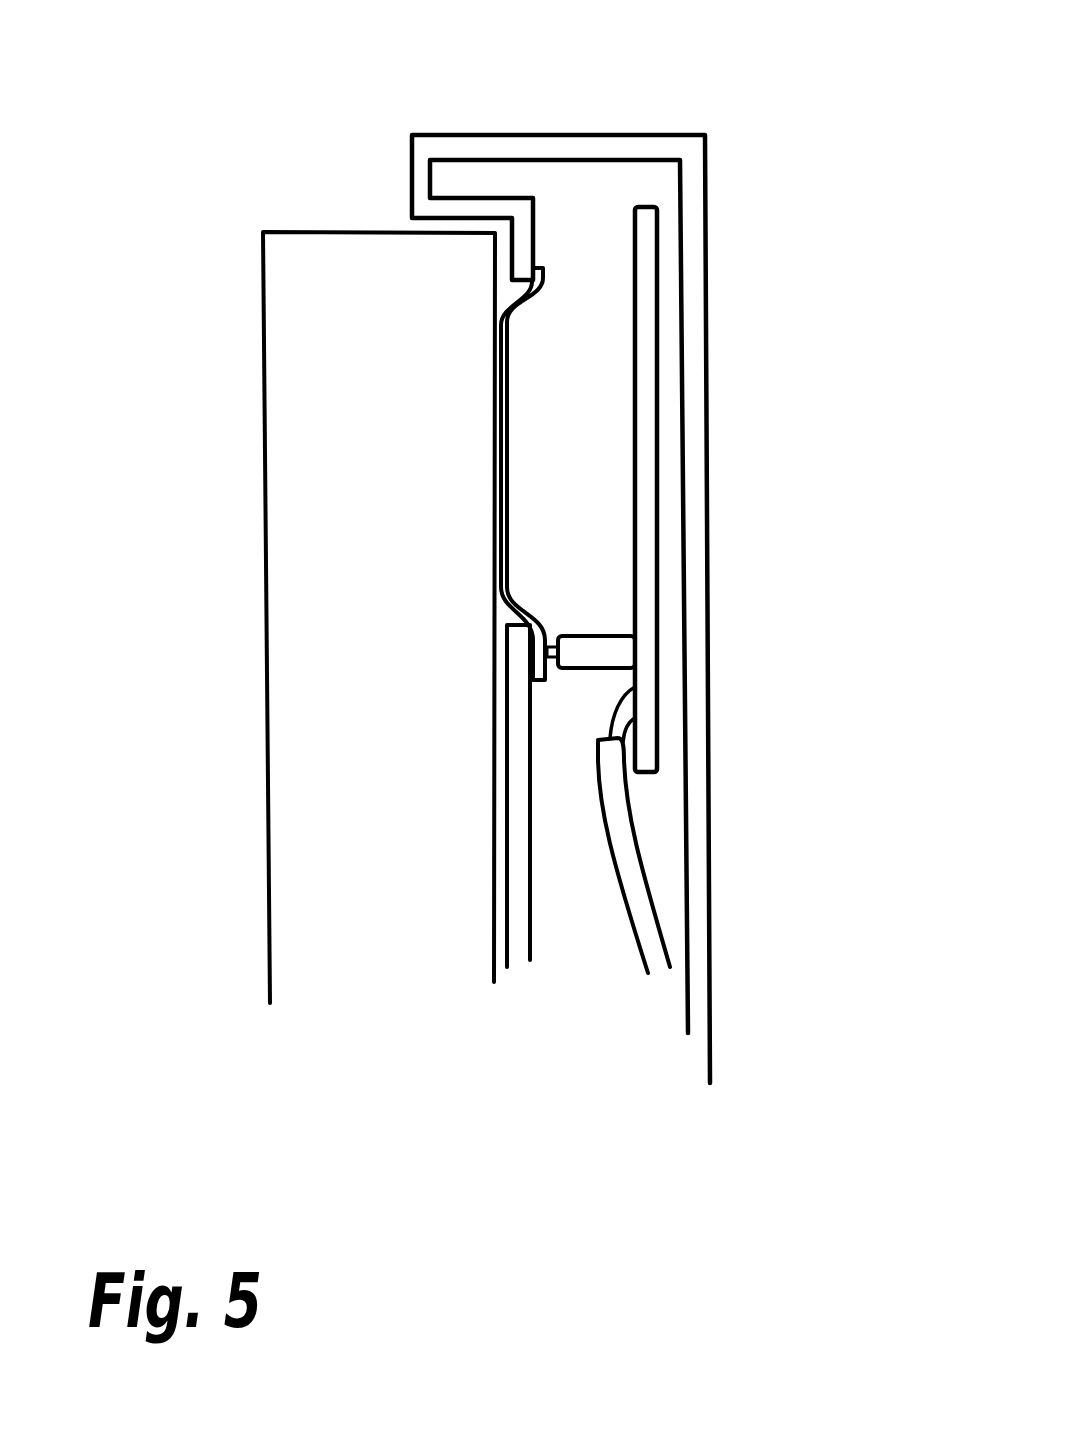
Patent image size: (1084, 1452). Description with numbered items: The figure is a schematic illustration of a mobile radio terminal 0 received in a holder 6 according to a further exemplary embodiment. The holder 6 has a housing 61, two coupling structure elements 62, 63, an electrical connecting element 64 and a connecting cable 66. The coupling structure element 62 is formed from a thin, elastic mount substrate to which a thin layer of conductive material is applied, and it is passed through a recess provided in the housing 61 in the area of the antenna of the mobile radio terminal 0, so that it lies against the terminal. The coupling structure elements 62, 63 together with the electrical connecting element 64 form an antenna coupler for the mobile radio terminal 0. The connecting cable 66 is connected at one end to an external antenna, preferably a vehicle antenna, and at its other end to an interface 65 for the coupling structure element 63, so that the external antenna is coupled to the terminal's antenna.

The mobile radio terminal 0 is at (312, 517).
The holder 6 is at (635, 124).
The housing 61 is at (517, 147).
The coupling structure element 62 is at (510, 338).
The coupling structure element 63 is at (770, 489).
The electrical connecting element 64 is at (593, 627).
The interface 65 is at (648, 705).
The connecting cable 66 is at (645, 822).